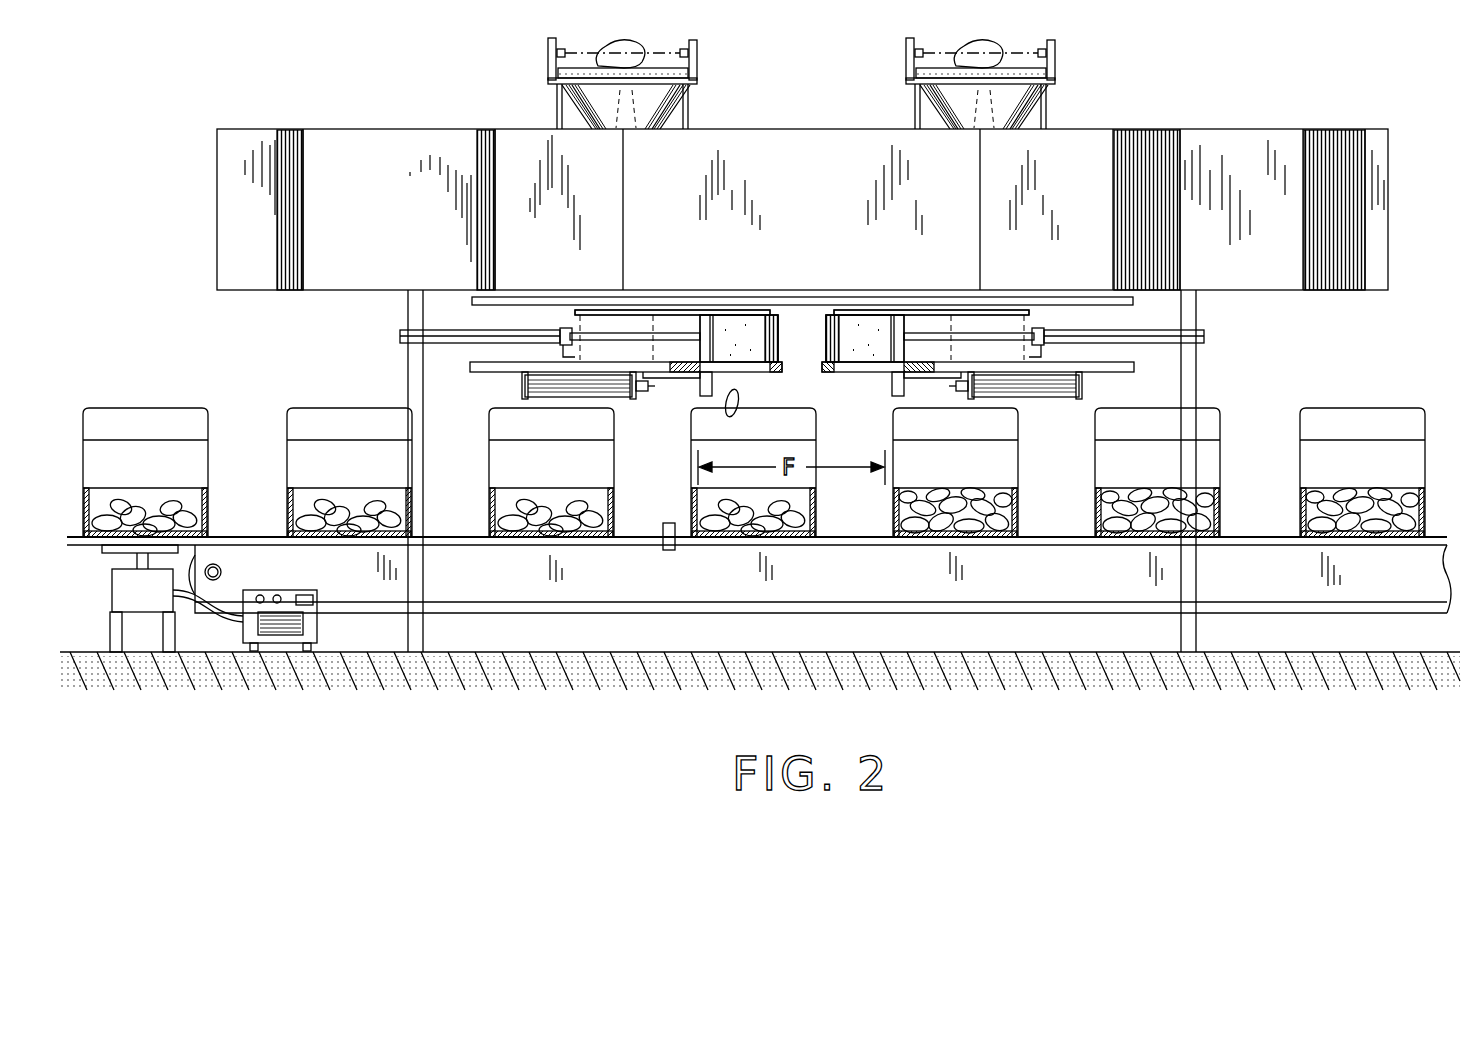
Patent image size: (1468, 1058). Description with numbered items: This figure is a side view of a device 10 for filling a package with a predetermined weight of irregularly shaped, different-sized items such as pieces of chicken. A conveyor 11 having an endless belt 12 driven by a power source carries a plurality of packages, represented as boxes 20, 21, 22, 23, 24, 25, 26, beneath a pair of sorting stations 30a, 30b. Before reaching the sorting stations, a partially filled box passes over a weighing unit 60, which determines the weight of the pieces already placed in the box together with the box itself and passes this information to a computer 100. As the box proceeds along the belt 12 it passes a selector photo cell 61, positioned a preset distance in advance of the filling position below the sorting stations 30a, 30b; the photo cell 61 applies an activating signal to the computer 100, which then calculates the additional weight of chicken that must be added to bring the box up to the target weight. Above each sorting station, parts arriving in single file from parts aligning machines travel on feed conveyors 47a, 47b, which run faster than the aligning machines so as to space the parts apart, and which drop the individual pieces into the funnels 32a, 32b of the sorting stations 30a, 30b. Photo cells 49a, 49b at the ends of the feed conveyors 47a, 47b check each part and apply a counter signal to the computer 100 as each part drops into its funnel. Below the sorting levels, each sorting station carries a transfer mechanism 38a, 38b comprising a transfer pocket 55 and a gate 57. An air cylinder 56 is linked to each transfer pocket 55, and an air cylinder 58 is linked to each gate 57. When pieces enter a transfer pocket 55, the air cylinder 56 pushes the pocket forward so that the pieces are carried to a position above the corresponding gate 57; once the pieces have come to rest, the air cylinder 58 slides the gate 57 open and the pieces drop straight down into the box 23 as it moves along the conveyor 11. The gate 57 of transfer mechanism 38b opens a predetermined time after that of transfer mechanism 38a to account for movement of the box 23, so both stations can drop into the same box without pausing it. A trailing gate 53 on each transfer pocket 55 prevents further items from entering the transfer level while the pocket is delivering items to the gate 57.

The device 10 is at (208, 124).
The conveyor 11 is at (406, 578).
The endless belt 12 is at (238, 535).
The box 20 is at (159, 437).
The box 21 is at (363, 437).
The box 22 is at (565, 437).
The box 23 is at (767, 437).
The box 24 is at (969, 437).
The box 25 is at (1171, 437).
The box 26 is at (1376, 437).
The sorting station 30a is at (571, 79).
The sorting station 30b is at (1056, 79).
The funnel 32a is at (668, 120).
The funnel 32b is at (1025, 120).
The transfer mechanism 38a is at (768, 307).
The transfer mechanism 38b is at (988, 322).
The feed conveyor 47a is at (698, 76).
The feed conveyor 47b is at (1057, 76).
The photo cell 49a is at (548, 54).
The photo cell 49b is at (905, 53).
The trailing gate 53 is at (654, 312).
The transfer pocket 55 is at (737, 325).
The air cylinder 56 is at (453, 343).
The gate 57 is at (675, 377).
The air cylinder 58 is at (525, 390).
The weighing unit 60 is at (157, 604).
The selector photo cell 61 is at (660, 551).
The computer 100 is at (316, 635).